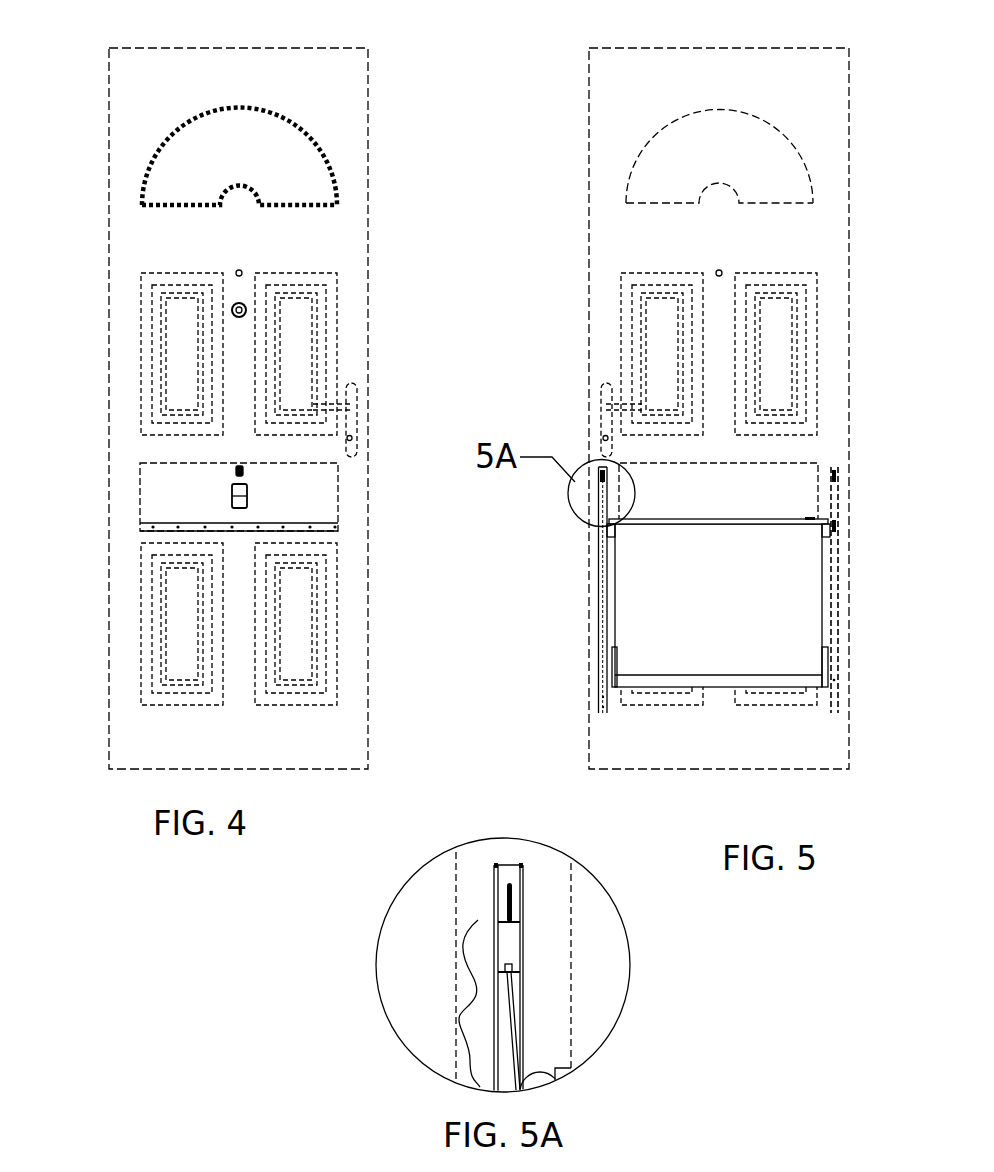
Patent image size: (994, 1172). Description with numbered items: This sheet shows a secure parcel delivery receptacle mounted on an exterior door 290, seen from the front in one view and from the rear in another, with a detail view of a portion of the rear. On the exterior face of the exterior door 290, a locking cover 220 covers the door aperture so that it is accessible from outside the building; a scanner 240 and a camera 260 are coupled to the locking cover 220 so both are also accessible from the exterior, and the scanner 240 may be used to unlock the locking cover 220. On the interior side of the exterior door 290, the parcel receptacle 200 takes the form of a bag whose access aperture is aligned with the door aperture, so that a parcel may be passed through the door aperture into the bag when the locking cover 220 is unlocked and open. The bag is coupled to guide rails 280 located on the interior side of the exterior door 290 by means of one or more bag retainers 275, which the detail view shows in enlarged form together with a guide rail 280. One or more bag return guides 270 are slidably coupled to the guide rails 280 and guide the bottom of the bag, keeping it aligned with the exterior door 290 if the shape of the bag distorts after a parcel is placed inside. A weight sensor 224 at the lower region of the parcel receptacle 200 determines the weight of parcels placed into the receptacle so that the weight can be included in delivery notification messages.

In FIG. 4, the exterior door 290 is at (336, 97).
In FIG. 5, the exterior door 290 is at (820, 83).
In FIG. 4, the camera 260 is at (243, 306).
In FIG. 4, the scanner 240 is at (231, 493).
In FIG. 4, the locking cover 220 is at (150, 507).
In FIG. 5, the parcel receptacle 200 is at (800, 562).
In FIG. 5, the guide rails 280 is at (603, 589).
In FIG. 5A, the guide rails 280 is at (557, 933).
In FIG. 5, the bag return guides 270 is at (625, 679).
In FIG. 5, the weight sensor 224 is at (800, 683).
In FIG. 5A, the bag retainers 275 is at (457, 1013).